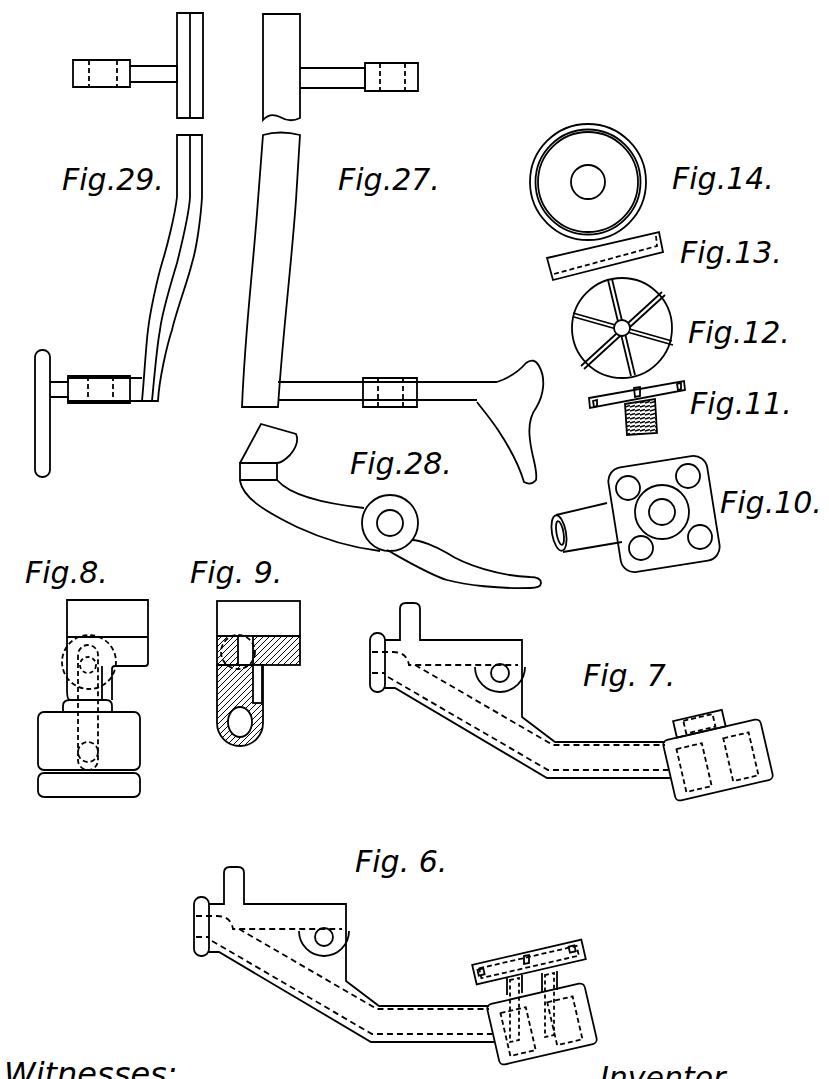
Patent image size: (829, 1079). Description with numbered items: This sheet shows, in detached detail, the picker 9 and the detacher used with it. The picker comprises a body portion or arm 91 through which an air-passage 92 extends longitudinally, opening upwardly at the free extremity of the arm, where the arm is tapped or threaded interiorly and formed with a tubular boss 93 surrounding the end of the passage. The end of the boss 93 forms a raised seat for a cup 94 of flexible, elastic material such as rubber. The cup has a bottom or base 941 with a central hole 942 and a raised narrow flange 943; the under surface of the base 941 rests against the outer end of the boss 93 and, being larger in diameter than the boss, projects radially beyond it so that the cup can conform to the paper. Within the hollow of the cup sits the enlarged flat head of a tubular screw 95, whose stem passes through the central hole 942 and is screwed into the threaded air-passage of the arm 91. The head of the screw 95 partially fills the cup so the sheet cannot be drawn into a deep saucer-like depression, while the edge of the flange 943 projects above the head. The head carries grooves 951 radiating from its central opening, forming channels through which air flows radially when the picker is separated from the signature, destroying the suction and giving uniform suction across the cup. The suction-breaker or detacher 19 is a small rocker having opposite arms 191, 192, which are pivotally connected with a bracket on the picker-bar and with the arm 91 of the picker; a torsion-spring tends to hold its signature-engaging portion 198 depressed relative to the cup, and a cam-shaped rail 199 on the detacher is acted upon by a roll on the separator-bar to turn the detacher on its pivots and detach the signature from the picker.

In FIG. 7, the picker 9 is at (500, 800).
In FIG. 6, the picker 9 is at (305, 887).
In FIG. 10, the body portion or arm 91 is at (591, 555).
In FIG. 8, the body portion or arm 91 is at (117, 694).
In FIG. 9, the body portion or arm 91 is at (263, 698).
In FIG. 7, the body portion or arm 91 is at (455, 723).
In FIG. 6, the body portion or arm 91 is at (344, 954).
In FIG. 10, the air-passage 92 is at (554, 538).
In FIG. 8, the air-passage 92 is at (76, 748).
In FIG. 9, the air-passage 92 is at (239, 736).
In FIG. 7, the air-passage 92 is at (589, 770).
In FIG. 6, the air-passage 92 is at (344, 975).
In FIG. 10, the tubular boss 93 is at (691, 499).
In FIG. 8, the tubular boss 93 is at (62, 705).
In FIG. 7, the tubular boss 93 is at (736, 712).
In FIG. 6, the tubular boss 93 is at (562, 1006).
In FIG. 14, the cup 94 is at (525, 172).
In FIG. 13, the cup 94 is at (546, 271).
In FIG. 6, the cup 94 is at (549, 931).
In FIG. 14, the bottom or base 941 is at (556, 160).
In FIG. 14, the central hole 942 is at (601, 169).
In FIG. 14, the raised narrow flange 943 is at (602, 122).
In FIG. 13, the raised narrow flange 943 is at (665, 233).
In FIG. 6, the raised narrow flange 943 is at (469, 966).
In FIG. 12, the tubular screw 95 is at (571, 331).
In FIG. 11, the tubular screw 95 is at (611, 411).
In FIG. 6, the tubular screw 95 is at (502, 967).
In FIG. 12, the grooves 951 is at (649, 310).
In FIG. 11, the grooves 951 is at (641, 398).
In FIG. 6, the grooves 951 is at (527, 960).
In FIG. 29, the suction-breaker or detacher 19 is at (113, 205).
In FIG. 27, the suction-breaker or detacher 19 is at (330, 198).
In FIG. 28, the suction-breaker or detacher 19 is at (438, 585).
In FIG. 29, the arm 191 is at (152, 65).
In FIG. 27, the arm 191 is at (339, 66).
In FIG. 29, the arm 192 is at (135, 379).
In FIG. 27, the arm 192 is at (318, 380).
In FIG. 29, the signature-engaging portion 198 is at (51, 443).
In FIG. 27, the signature-engaging portion 198 is at (511, 442).
In FIG. 29, the cam-shaped rail 199 is at (171, 221).
In FIG. 27, the cam-shaped rail 199 is at (279, 253).
In FIG. 28, the cam-shaped rail 199 is at (263, 447).